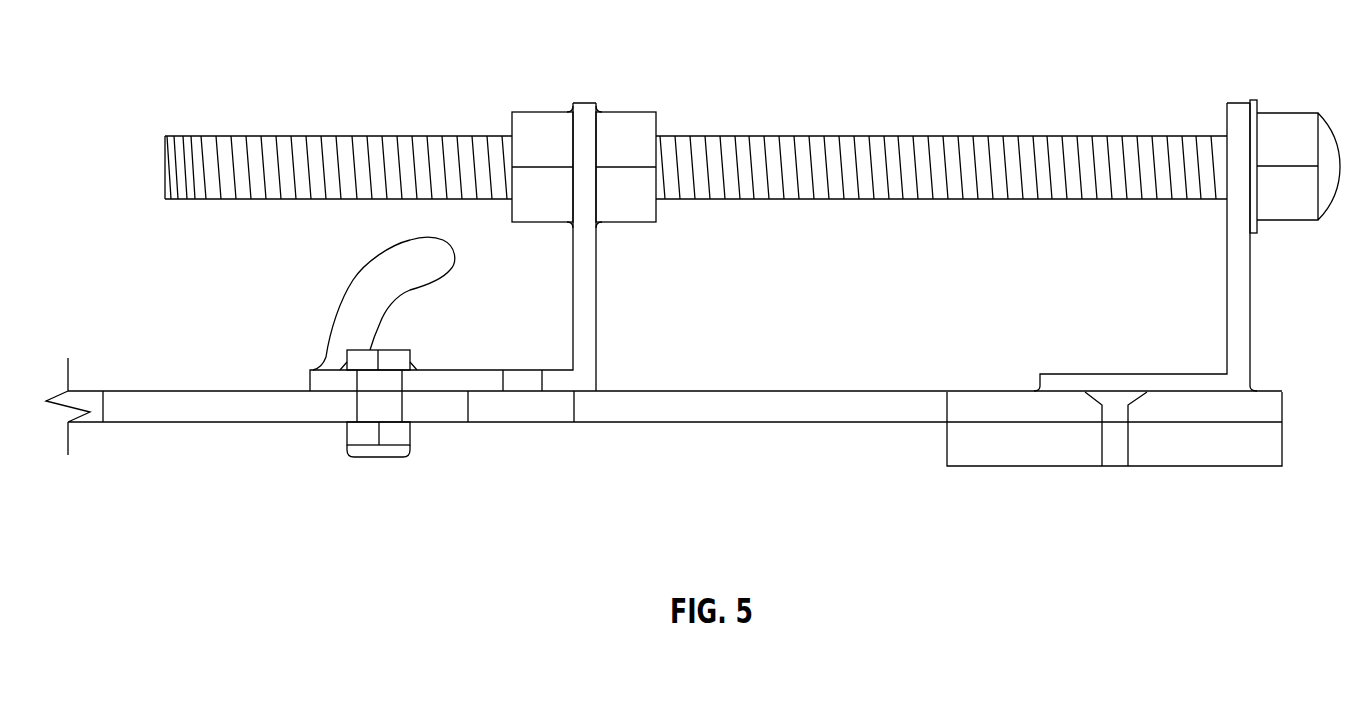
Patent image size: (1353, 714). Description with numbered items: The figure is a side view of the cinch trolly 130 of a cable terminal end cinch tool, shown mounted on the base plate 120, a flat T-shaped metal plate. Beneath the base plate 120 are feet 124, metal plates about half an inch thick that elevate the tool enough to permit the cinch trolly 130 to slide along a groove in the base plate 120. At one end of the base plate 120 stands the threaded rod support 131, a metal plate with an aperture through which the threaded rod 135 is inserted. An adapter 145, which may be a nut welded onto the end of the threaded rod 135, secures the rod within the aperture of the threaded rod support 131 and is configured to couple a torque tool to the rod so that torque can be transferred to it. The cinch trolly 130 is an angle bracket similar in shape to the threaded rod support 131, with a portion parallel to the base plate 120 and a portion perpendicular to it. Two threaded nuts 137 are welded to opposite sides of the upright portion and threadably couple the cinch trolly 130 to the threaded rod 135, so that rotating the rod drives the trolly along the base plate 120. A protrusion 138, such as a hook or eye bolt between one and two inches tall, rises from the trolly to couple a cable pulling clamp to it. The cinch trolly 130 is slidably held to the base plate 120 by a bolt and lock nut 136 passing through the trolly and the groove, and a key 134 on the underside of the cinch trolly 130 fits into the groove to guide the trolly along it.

The base plate 120 is at (740, 424).
The feet 124 is at (1030, 467).
The cinch trolly 130 is at (460, 383).
The threaded rod support 131 is at (1227, 148).
The key 134 is at (520, 425).
The threaded rod 135 is at (905, 158).
The bolt and lock nut 136 is at (340, 437).
The threaded nuts 137 is at (542, 120).
The protrusion 138 is at (375, 265).
The adapter 145 is at (1288, 128).